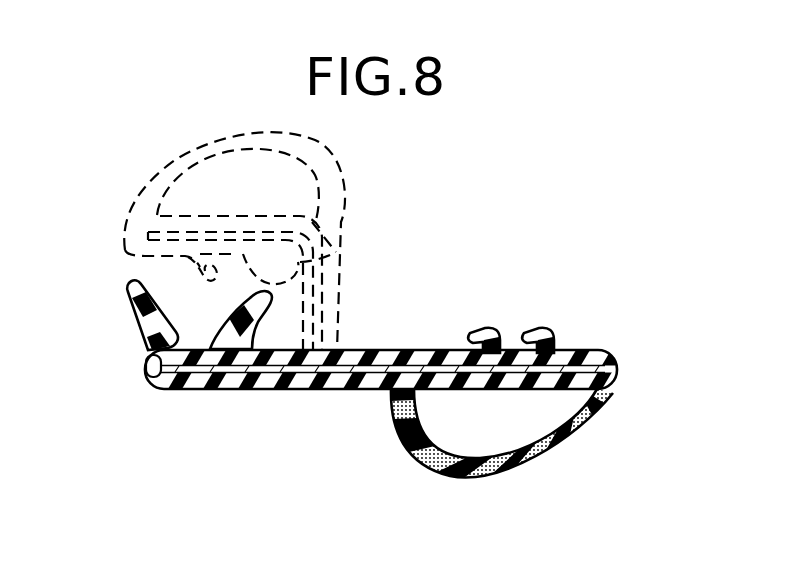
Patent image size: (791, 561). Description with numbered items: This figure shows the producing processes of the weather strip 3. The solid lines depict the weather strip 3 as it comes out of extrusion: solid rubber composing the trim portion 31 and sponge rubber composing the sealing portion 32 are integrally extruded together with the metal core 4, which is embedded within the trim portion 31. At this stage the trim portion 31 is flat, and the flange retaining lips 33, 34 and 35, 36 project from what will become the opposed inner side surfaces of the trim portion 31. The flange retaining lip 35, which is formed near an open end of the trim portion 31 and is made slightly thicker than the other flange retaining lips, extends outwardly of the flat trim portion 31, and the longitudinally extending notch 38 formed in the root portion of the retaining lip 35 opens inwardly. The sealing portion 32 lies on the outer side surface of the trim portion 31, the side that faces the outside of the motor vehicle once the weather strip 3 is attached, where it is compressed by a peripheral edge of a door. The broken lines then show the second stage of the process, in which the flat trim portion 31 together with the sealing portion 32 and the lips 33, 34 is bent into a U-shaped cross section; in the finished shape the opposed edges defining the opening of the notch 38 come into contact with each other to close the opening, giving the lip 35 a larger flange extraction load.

The weather strip 3 is at (614, 408).
The metal core 4 is at (387, 390).
The trim portion 31 is at (331, 389).
The sealing portion 32 is at (179, 159).
The flange retaining lip 33 is at (540, 333).
The flange retaining lip 34 is at (476, 333).
The flange retaining lip 35 is at (131, 310).
The flange retaining lip 36 is at (256, 306).
The notch 38 is at (144, 348).